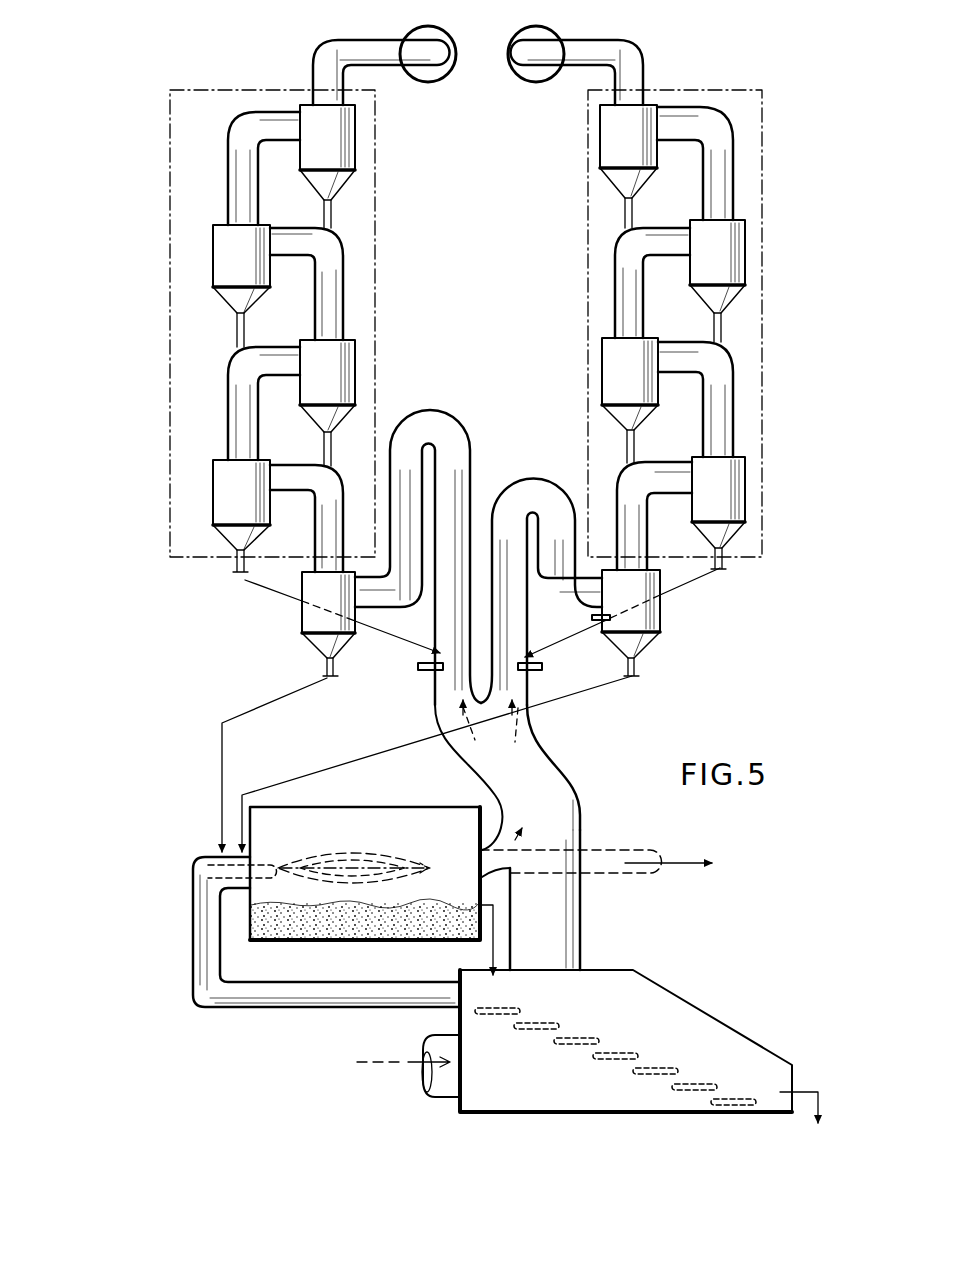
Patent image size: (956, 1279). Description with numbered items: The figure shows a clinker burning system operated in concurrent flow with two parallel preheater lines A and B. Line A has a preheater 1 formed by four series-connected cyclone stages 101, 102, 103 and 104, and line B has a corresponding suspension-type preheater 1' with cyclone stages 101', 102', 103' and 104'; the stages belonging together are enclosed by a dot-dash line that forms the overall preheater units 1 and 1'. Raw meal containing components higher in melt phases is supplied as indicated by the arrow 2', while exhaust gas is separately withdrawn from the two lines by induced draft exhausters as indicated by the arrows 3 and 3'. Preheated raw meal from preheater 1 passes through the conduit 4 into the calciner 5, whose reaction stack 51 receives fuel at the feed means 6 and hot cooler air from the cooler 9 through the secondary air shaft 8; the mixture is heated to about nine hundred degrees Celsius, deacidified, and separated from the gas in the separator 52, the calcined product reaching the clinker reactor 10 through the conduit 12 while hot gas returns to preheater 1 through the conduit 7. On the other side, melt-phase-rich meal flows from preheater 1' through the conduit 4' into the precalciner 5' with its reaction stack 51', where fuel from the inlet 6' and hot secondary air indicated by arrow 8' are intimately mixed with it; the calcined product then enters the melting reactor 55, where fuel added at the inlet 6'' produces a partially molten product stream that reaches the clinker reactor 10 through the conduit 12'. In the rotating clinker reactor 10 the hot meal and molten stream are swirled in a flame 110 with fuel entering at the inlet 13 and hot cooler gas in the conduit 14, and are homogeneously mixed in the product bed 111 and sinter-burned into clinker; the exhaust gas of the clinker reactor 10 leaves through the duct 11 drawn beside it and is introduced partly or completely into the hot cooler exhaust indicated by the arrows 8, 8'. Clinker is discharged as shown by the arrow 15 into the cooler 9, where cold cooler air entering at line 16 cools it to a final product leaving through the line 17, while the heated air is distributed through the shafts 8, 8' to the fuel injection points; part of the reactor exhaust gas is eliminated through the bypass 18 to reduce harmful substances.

The preheater 1 is at (252, 323).
The preheater 1' is at (695, 323).
The raw meal supply arrow 2' is at (476, 83).
The exhaust gas arrow 3 is at (393, 54).
The exhaust gas arrow 3' is at (575, 52).
The conduit 4 is at (332, 616).
The conduit 4' is at (630, 612).
The calciner 5 is at (418, 541).
The precalciner 5' is at (541, 570).
The reaction stack 51 is at (470, 572).
The reaction stack 51' is at (511, 611).
The separator 52 is at (302, 622).
The melting reactor 55 is at (660, 630).
The fuel feed means 6 is at (422, 684).
The fuel inlet 6' is at (549, 670).
The fuel inlet 6'' is at (571, 628).
The conduit 7 is at (332, 540).
The secondary air shaft 8 is at (474, 788).
The secondary air arrow 8' is at (547, 765).
The cooler 9 is at (626, 1041).
The clinker reactor 10 is at (365, 873).
The kiln exhaust gas pipe 11 is at (500, 858).
The conduit 12 is at (274, 761).
The conduit 12' is at (437, 764).
The fuel inlet 13 is at (215, 878).
The conduit 14 is at (205, 962).
The clinker discharge arrow 15 is at (490, 950).
The cooler air line 16 is at (393, 1062).
The final product line 17 is at (803, 1088).
The bypass 18 is at (628, 848).
The cyclone stage 101 is at (189, 516).
The cyclone stage 102 is at (366, 403).
The cyclone stage 103 is at (189, 286).
The cyclone stage 104 is at (366, 166).
The cyclone stage 101' is at (756, 513).
The cyclone stage 102' is at (590, 400).
The cyclone stage 103' is at (753, 281).
The cyclone stage 104' is at (592, 166).
The flame 110 is at (345, 855).
The product bed 111 is at (350, 925).
The preheater line A is at (385, 222).
The preheater line B is at (570, 230).